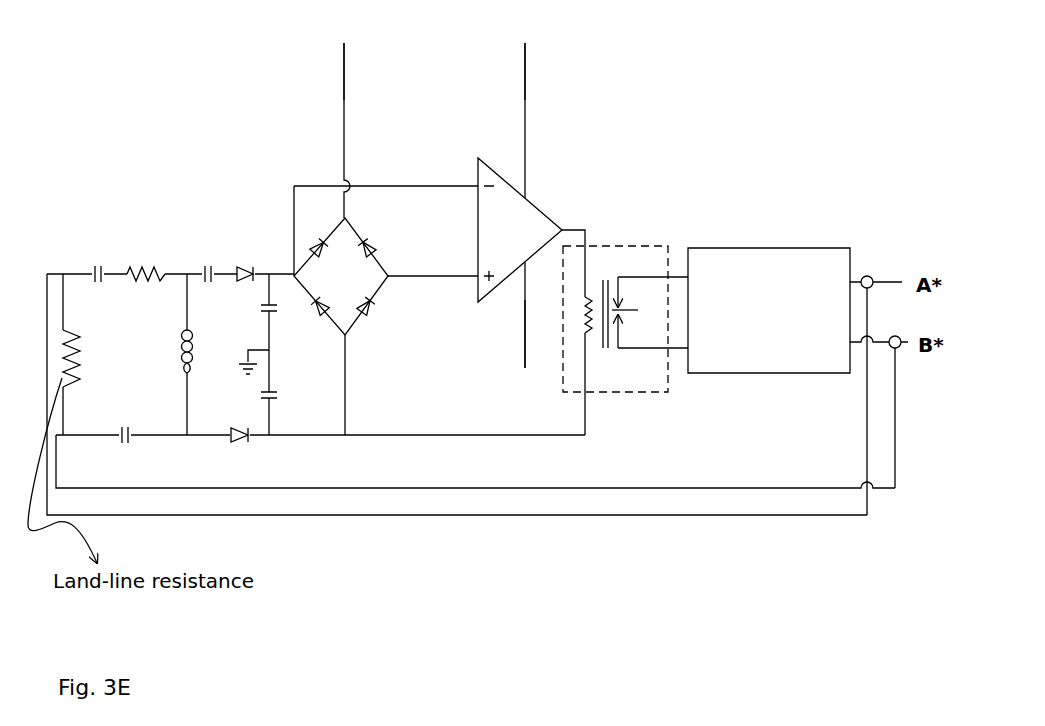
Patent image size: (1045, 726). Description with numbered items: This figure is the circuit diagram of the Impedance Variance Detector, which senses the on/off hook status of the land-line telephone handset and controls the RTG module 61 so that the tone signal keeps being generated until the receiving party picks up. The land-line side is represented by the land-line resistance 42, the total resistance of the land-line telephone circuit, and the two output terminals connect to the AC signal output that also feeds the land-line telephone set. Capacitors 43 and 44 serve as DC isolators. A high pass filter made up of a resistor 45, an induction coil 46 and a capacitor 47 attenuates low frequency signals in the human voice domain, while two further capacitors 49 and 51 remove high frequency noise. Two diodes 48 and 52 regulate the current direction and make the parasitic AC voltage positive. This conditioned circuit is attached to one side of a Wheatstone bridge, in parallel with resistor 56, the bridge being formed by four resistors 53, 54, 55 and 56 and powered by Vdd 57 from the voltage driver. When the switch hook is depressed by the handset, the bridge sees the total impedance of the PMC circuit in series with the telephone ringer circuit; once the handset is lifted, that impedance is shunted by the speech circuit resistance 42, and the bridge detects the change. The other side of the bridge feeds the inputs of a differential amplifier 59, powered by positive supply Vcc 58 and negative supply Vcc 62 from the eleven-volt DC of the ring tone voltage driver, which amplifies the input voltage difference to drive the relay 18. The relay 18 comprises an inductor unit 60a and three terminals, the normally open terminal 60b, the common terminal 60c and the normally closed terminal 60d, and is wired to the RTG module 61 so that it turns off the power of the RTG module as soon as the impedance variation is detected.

The mechanical relay 18 is at (607, 238).
The land-line resistance 42 is at (86, 358).
The capacitor 43 is at (92, 293).
The capacitor 44 is at (113, 454).
The resistor 45 is at (146, 262).
The induction coil 46 is at (168, 353).
The capacitor 47 is at (207, 262).
The diode 48 is at (242, 262).
The capacitor 49 is at (258, 317).
The capacitor 51 is at (257, 405).
The diode 52 is at (242, 454).
The Wheatstone bridge resistor 53 is at (312, 242).
The Wheatstone bridge resistor 54 is at (379, 246).
The Wheatstone bridge resistor 55 is at (380, 321).
The Wheatstone bridge resistor 56 is at (315, 321).
The Vdd 57 is at (302, 83).
The +Vcc 58 is at (487, 73).
The differential amplifier 59 is at (523, 222).
The inductor unit 60a is at (574, 314).
The NO terminal 60b is at (647, 277).
The CO terminal 60c is at (643, 325).
The NC terminal 60d is at (653, 375).
The RTG module 61 is at (780, 242).
The −Vcc 62 is at (484, 348).